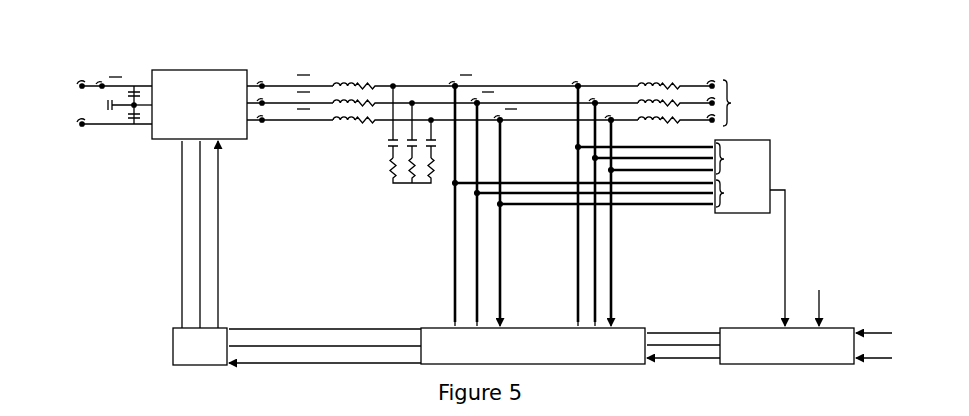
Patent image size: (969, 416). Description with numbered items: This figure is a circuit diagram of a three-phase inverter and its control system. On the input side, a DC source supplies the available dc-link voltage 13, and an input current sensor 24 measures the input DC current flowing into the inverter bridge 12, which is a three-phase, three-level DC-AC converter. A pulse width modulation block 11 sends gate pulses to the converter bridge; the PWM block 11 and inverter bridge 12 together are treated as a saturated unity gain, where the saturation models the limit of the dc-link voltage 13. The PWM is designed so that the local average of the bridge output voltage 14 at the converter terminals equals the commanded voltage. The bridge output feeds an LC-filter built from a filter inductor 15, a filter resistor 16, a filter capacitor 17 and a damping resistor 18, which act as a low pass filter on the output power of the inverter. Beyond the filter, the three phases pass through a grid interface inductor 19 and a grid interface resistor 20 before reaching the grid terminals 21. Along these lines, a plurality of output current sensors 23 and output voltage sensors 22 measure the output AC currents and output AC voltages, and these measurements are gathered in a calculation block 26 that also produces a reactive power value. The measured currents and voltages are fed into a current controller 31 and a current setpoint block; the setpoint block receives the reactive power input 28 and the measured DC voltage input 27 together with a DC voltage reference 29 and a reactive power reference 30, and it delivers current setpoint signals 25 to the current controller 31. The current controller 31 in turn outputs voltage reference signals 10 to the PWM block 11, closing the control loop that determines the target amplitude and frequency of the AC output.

The voltage reference signals 10 is at (321, 318).
The pulse width modulation block 11 is at (229, 320).
The inverter bridge 12 is at (150, 143).
The dc-link voltage 13 is at (72, 111).
The bridge output voltage 14 is at (266, 136).
The LC-filter inductor 15 is at (336, 82).
The LC-filter resistor 16 is at (369, 82).
The LC-filter capacitor 17 is at (368, 148).
The LC-filter damping resistor 18 is at (381, 180).
The grid interface inductor 19 is at (643, 82).
The grid interface resistor 20 is at (677, 82).
The grid connection terminals 21 is at (714, 82).
The output voltage sensors 22 is at (578, 82).
The output current sensors 23 is at (453, 82).
The input current sensor 24 is at (103, 83).
The current setpoint signals 25 is at (691, 314).
The reactive power calculation block 26 is at (773, 137).
The DC voltage input 27 is at (830, 278).
The reactive power input 28 is at (792, 278).
The DC voltage reference 29 is at (897, 318).
The reactive power reference 30 is at (897, 352).
The current controller 31 is at (538, 325).